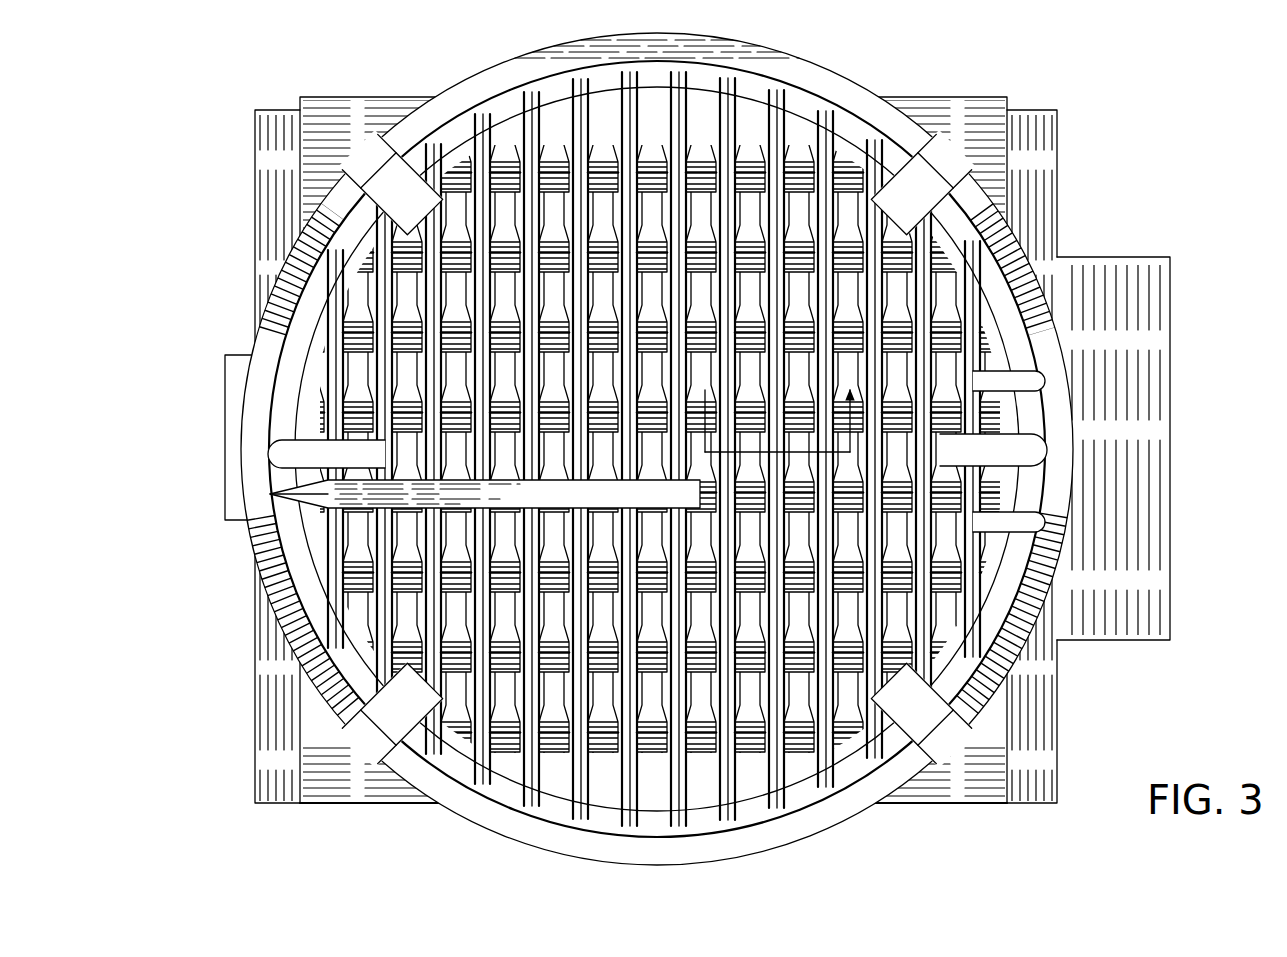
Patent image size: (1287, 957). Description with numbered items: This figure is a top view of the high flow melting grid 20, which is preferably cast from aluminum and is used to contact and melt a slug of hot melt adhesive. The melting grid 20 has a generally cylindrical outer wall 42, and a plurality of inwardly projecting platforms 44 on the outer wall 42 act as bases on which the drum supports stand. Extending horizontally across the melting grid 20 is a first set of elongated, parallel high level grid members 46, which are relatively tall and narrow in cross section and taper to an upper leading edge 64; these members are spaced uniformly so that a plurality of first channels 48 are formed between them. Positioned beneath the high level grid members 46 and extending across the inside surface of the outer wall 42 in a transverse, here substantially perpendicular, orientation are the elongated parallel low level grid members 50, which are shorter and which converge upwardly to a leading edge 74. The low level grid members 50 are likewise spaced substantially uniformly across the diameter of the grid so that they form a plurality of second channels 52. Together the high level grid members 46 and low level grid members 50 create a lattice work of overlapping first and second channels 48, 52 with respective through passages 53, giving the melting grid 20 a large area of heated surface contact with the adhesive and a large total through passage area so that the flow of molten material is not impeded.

The melting grid 20 is at (638, 451).
The outer wall 42 is at (262, 398).
The platforms 44 is at (393, 203).
The high level grid members 46 is at (696, 80).
The first channels 48 is at (607, 97).
The low level grid members 50 is at (795, 236).
The second channels 52 is at (420, 348).
The through passages 53 is at (658, 453).
The upper leading edge 64 is at (623, 832).
The leading edge 74 is at (945, 488).